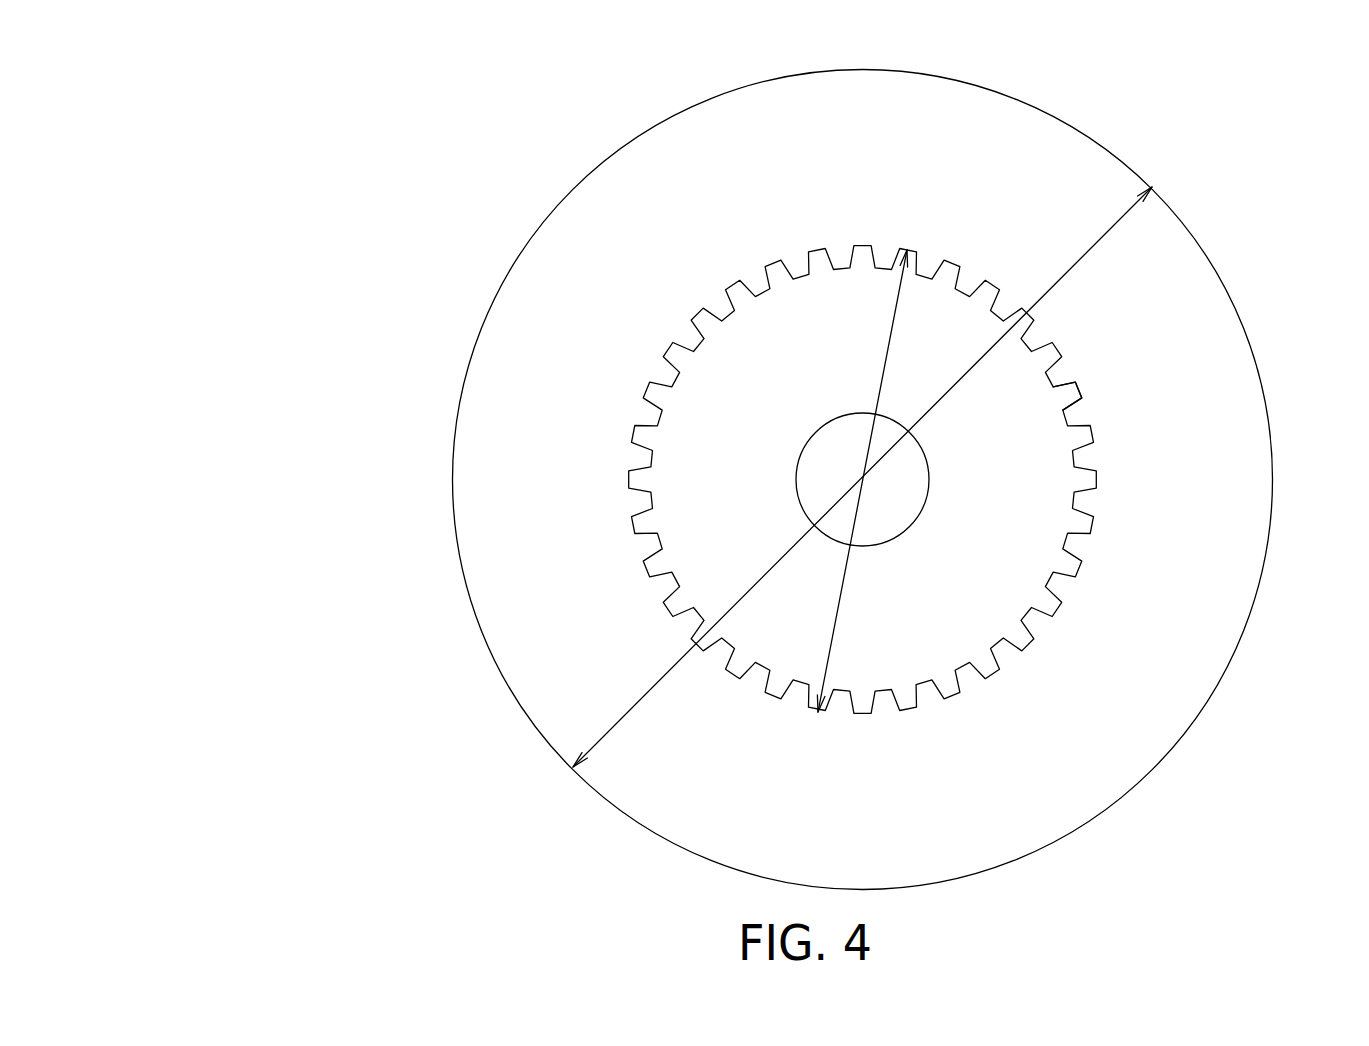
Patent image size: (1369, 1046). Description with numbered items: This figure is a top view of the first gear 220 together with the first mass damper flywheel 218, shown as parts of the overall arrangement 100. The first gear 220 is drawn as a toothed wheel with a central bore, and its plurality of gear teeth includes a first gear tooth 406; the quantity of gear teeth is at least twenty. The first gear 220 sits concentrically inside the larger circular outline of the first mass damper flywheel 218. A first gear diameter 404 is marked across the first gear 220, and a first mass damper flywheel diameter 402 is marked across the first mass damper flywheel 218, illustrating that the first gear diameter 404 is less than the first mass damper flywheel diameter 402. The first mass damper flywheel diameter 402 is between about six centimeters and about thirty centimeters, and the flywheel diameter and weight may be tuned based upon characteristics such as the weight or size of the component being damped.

The gear assembly 100 is at (307, 92).
The first mass damper flywheel 218 is at (1223, 330).
The first gear 220 is at (748, 370).
The first mass damper flywheel diameter 402 is at (1093, 244).
The first gear diameter 404 is at (838, 620).
The first gear tooth 406 is at (1063, 400).